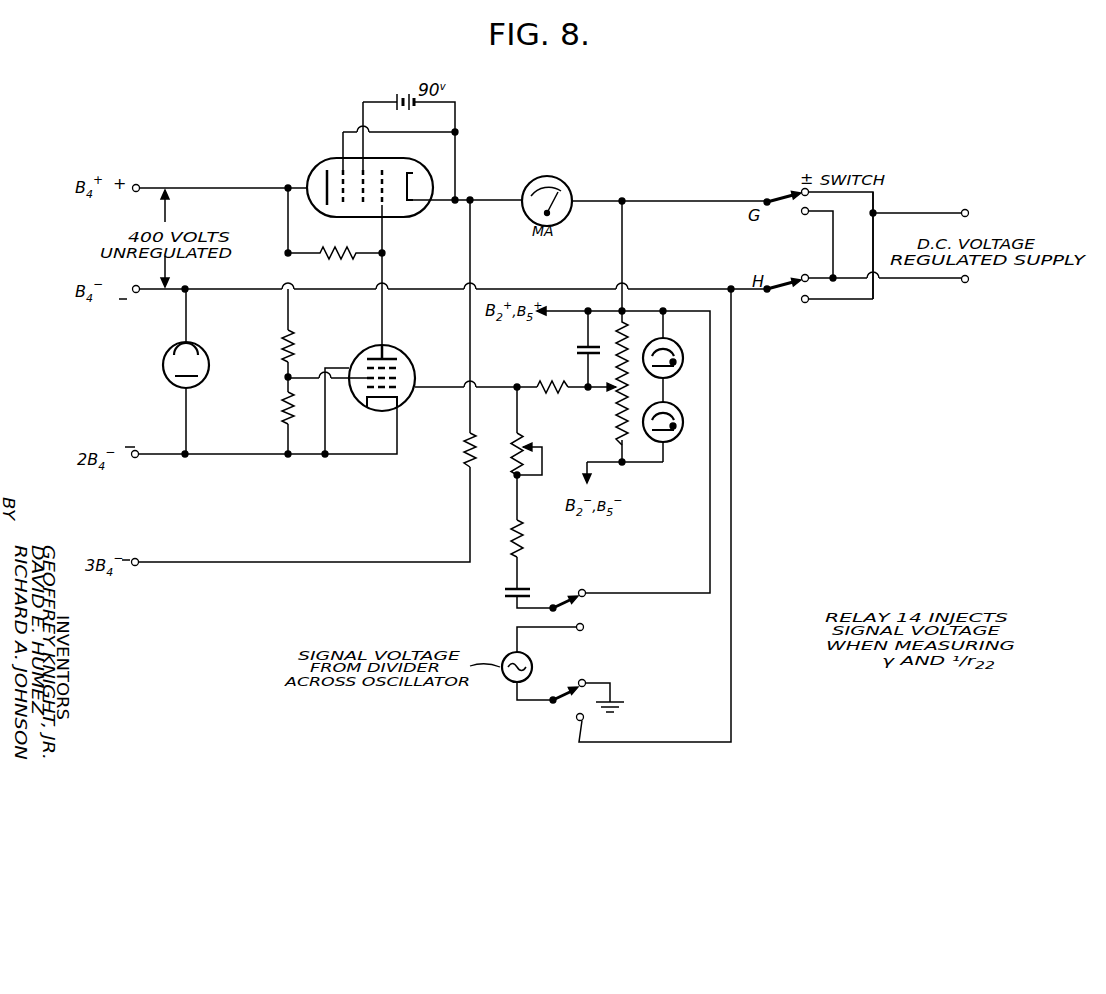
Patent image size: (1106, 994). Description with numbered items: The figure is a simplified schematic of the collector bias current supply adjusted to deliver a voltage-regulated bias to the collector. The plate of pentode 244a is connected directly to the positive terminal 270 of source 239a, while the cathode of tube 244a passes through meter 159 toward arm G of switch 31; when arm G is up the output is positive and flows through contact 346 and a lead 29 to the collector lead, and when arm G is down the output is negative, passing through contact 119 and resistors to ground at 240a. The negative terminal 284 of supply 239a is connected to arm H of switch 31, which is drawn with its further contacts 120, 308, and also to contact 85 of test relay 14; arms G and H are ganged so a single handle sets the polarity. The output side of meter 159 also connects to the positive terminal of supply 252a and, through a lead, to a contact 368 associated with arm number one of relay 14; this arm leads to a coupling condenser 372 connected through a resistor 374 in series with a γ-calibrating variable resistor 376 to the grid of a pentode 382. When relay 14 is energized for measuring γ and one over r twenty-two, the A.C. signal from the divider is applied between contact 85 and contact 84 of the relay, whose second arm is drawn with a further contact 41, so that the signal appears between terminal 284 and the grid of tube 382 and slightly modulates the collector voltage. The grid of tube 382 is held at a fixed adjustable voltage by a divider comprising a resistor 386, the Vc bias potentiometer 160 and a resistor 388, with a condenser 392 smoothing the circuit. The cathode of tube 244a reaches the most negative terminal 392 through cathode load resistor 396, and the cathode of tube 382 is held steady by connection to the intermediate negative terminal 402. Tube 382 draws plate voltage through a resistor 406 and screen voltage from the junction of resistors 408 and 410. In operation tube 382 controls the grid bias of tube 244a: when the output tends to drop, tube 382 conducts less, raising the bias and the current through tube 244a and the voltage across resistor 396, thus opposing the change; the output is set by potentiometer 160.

The positive terminal 270 is at (120, 202).
The negative terminal 284 is at (120, 277).
The pentode 244a is at (312, 172).
The resistor 406 is at (338, 257).
The meter 159 is at (562, 186).
The contact 346 is at (783, 230).
The switch 31 is at (889, 193).
The contact 119 is at (804, 215).
The switch contact 120 is at (804, 274).
The switch contact 308 is at (805, 303).
The lead 29 is at (969, 213).
The ground 240a is at (968, 283).
The resistor 408 is at (282, 348).
The resistor 410 is at (282, 406).
The pentode 382 is at (414, 346).
The resistor 386 is at (618, 337).
The resistor 388 is at (620, 441).
The condenser 392 is at (575, 351).
The Vc bias potentiometer 160 is at (615, 387).
The supply 252a is at (694, 393).
The γ-calibrating variable resistor 376 is at (524, 434).
The resistor 396 is at (465, 454).
The resistor 374 is at (524, 530).
The coupling condenser 372 is at (503, 593).
The contact 368 is at (586, 592).
The contact 84 is at (584, 627).
The relay contact 41 is at (586, 684).
The contact 85 is at (597, 727).
The test relay 14 is at (551, 715).
The source 239a is at (79, 377).
The intermediate negative terminal 402 is at (121, 469).